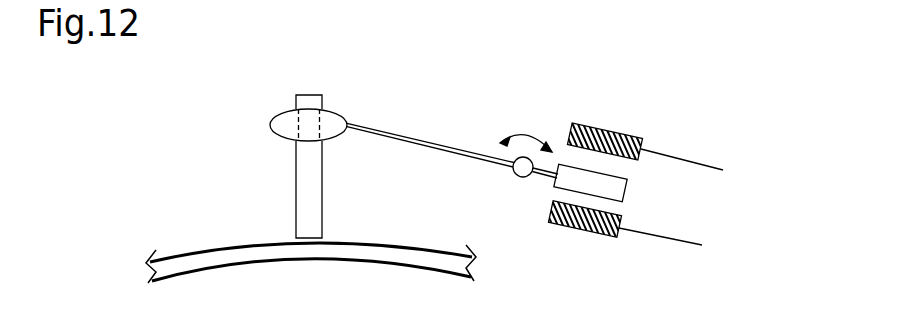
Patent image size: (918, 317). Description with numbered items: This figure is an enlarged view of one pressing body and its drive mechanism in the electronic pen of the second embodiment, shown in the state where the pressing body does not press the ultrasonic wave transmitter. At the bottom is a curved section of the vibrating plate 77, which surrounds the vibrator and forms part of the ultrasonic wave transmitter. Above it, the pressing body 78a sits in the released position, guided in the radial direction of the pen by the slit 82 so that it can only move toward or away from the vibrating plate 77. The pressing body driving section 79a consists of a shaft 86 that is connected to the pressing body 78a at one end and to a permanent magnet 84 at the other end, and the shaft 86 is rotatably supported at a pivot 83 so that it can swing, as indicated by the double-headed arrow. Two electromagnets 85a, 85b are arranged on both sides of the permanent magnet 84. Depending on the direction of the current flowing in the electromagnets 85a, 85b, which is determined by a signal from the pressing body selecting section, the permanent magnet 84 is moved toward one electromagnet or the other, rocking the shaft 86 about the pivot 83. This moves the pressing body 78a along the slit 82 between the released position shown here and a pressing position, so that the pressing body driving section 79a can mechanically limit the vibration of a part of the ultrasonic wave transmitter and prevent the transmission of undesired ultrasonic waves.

The vibrating plate 77 is at (185, 254).
The pressing body 78a is at (276, 120).
The slit 82 is at (296, 178).
The shaft 86 is at (394, 130).
The pivot 83 is at (521, 178).
The pressing body driving section 79a is at (490, 95).
The permanent magnet 84 is at (631, 190).
The electromagnet 85a is at (613, 133).
The electromagnet 85b is at (575, 225).